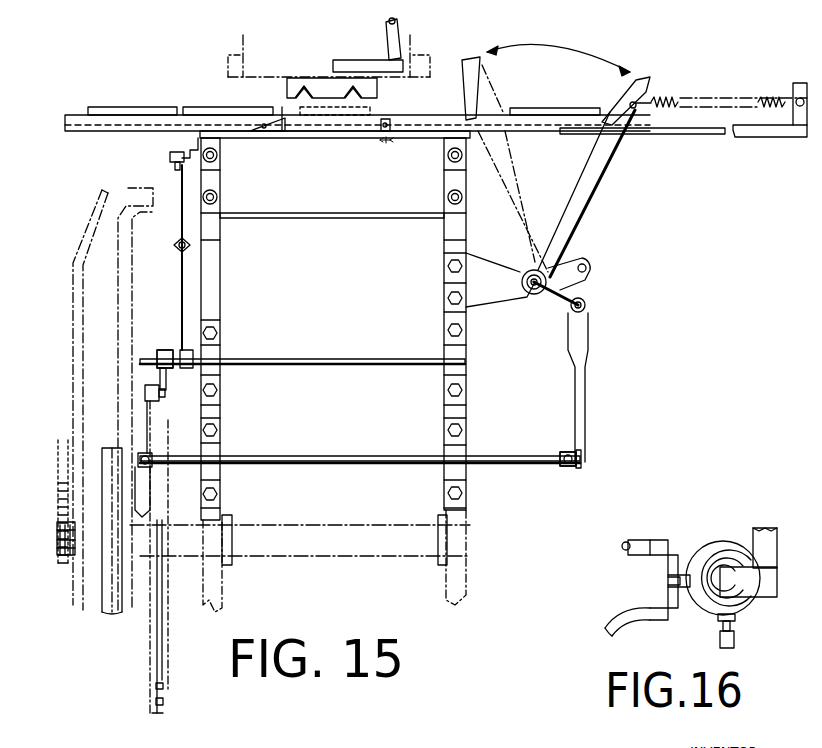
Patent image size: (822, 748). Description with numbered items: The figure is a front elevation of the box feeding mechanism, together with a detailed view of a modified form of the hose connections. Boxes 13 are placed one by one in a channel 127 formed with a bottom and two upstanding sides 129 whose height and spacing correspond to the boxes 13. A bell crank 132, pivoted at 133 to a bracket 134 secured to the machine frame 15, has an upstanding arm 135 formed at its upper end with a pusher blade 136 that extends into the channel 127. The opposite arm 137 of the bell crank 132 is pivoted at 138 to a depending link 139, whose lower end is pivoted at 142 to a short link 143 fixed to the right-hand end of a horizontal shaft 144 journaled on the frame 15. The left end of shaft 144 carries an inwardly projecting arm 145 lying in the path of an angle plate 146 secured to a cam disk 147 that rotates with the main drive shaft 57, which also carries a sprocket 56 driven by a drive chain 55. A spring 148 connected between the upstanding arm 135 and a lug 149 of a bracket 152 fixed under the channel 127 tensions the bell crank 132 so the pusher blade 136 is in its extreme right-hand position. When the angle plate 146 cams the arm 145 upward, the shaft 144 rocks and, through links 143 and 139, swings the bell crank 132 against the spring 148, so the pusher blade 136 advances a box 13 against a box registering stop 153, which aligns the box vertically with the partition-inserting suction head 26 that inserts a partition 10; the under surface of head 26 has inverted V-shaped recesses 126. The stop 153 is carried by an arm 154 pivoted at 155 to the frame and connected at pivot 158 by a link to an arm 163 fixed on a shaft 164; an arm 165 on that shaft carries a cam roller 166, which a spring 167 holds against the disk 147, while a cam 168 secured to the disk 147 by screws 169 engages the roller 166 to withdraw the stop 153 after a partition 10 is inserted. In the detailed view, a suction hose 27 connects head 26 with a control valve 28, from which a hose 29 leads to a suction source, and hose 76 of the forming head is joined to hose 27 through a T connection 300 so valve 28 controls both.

In FIG. 15, the partition 10 is at (298, 94).
In FIG. 15, the box 13 is at (146, 106).
In FIG. 15, the machine frame 15 is at (224, 404).
In FIG. 15, the partition-inserting suction head 26 is at (374, 86).
In FIG. 16, the suction hose 27 is at (637, 542).
In FIG. 16, the control valve 28 is at (736, 541).
In FIG. 16, the hose 29 is at (734, 640).
In FIG. 15, the drive chain 55 is at (60, 497).
In FIG. 15, the sprocket 56 is at (60, 556).
In FIG. 15, the main drive shaft 57 is at (345, 552).
In FIG. 16, the hose 76 is at (630, 628).
In FIG. 15, the inverted V-shaped recesses 126 is at (348, 92).
In FIG. 15, the channel 127 is at (525, 103).
In FIG. 15, the upstanding sides 129 is at (436, 114).
In FIG. 15, the bell crank 132 is at (542, 220).
In FIG. 15, the pivot 133 is at (535, 294).
In FIG. 15, the bracket 134 is at (492, 288).
In FIG. 15, the upstanding arm 135 is at (606, 148).
In FIG. 15, the pusher blade 136 is at (610, 118).
In FIG. 15, the opposite arm 137 is at (574, 286).
In FIG. 15, the pivot 138 is at (590, 310).
In FIG. 15, the depending link 139 is at (590, 394).
In FIG. 15, the pivot 142 is at (582, 460).
In FIG. 15, the short link 143 is at (572, 470).
In FIG. 15, the shaft 144 is at (383, 476).
In FIG. 15, the inwardly projecting arm 145 is at (146, 452).
In FIG. 15, the angle plate 146 is at (151, 496).
In FIG. 15, the cam disk 147 is at (163, 564).
In FIG. 15, the spring 148 is at (658, 100).
In FIG. 15, the lug 149 is at (806, 94).
In FIG. 15, the bracket 152 is at (737, 138).
In FIG. 15, the box registering stop 153 is at (282, 111).
In FIG. 15, the arm 154 is at (238, 133).
In FIG. 15, the pivot 155 is at (385, 134).
In FIG. 15, the pivot 158 is at (172, 156).
In FIG. 15, the arm 163 is at (180, 298).
In FIG. 15, the shaft 164 is at (185, 368).
In FIG. 15, the inwardly projecting arm 165 is at (160, 369).
In FIG. 15, the cam roller 166 is at (144, 391).
In FIG. 15, the spring 167 is at (176, 245).
In FIG. 15, the cam 168 is at (160, 704).
In FIG. 15, the screws 169 is at (157, 688).
In FIG. 16, the T connection 300 is at (674, 549).